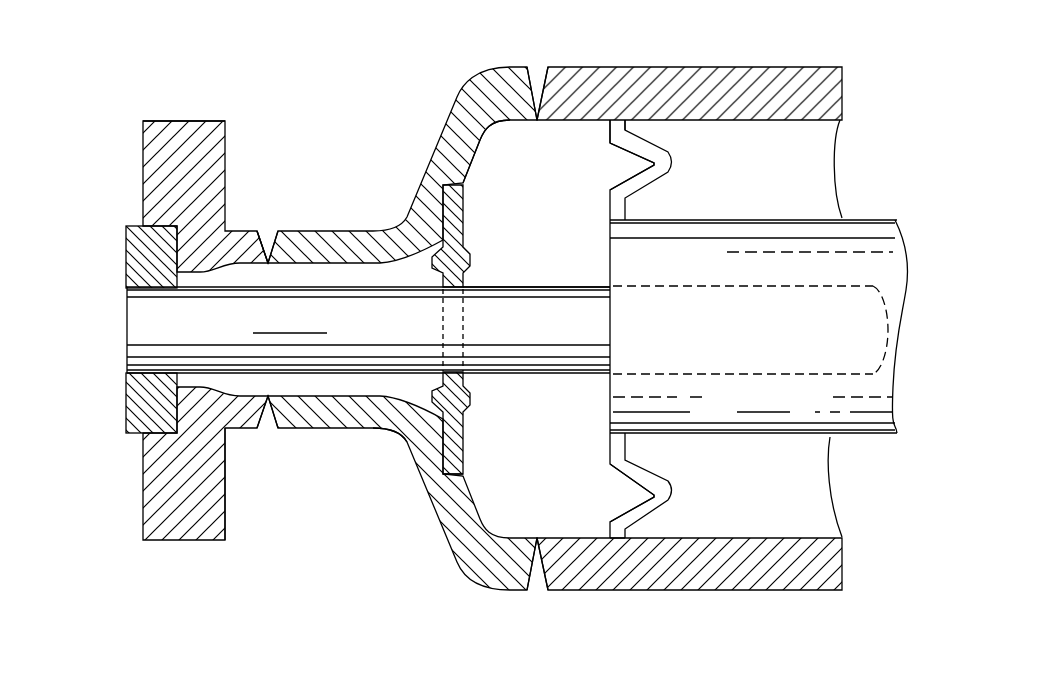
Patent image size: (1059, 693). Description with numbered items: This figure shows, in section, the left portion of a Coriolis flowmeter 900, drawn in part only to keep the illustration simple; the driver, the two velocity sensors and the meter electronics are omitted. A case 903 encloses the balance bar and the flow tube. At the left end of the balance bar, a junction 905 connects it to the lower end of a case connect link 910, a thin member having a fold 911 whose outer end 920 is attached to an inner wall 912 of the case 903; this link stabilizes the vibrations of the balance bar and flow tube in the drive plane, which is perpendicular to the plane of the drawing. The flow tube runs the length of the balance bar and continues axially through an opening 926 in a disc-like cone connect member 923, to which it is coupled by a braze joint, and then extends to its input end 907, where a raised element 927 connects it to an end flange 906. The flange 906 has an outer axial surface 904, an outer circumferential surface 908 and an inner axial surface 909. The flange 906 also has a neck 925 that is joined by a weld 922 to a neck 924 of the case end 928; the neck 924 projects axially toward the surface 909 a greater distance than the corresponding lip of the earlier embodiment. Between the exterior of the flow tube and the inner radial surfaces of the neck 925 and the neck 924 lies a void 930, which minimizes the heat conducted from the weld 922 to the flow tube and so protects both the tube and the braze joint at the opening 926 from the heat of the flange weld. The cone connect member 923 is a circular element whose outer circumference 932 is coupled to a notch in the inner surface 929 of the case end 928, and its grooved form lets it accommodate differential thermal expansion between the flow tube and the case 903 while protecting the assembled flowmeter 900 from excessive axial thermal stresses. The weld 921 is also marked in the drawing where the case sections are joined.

The flowmeter 900 is at (710, 33).
The case 903 is at (748, 80).
The outer axial surface 904 is at (143, 197).
The junction 905 is at (630, 219).
The flange 906 is at (218, 104).
The input end 907 is at (143, 331).
The outer circumferential surface 908 is at (183, 543).
The inner axial surface 909 is at (226, 513).
The case connect link 910 is at (697, 170).
The fold 911 is at (634, 166).
The inner wall 912 is at (800, 120).
The outer end 920 is at (627, 130).
The weld 921 is at (532, 72).
The weld 922 is at (267, 232).
The cone connect member 923 is at (490, 247).
The neck 924 is at (307, 232).
The neck 925 is at (256, 232).
The opening 926 is at (462, 287).
The raised element 927 is at (130, 255).
The case end 928 is at (452, 541).
The inner surface 929 is at (467, 476).
The void 930 is at (415, 390).
The outer circumference 932 is at (442, 186).